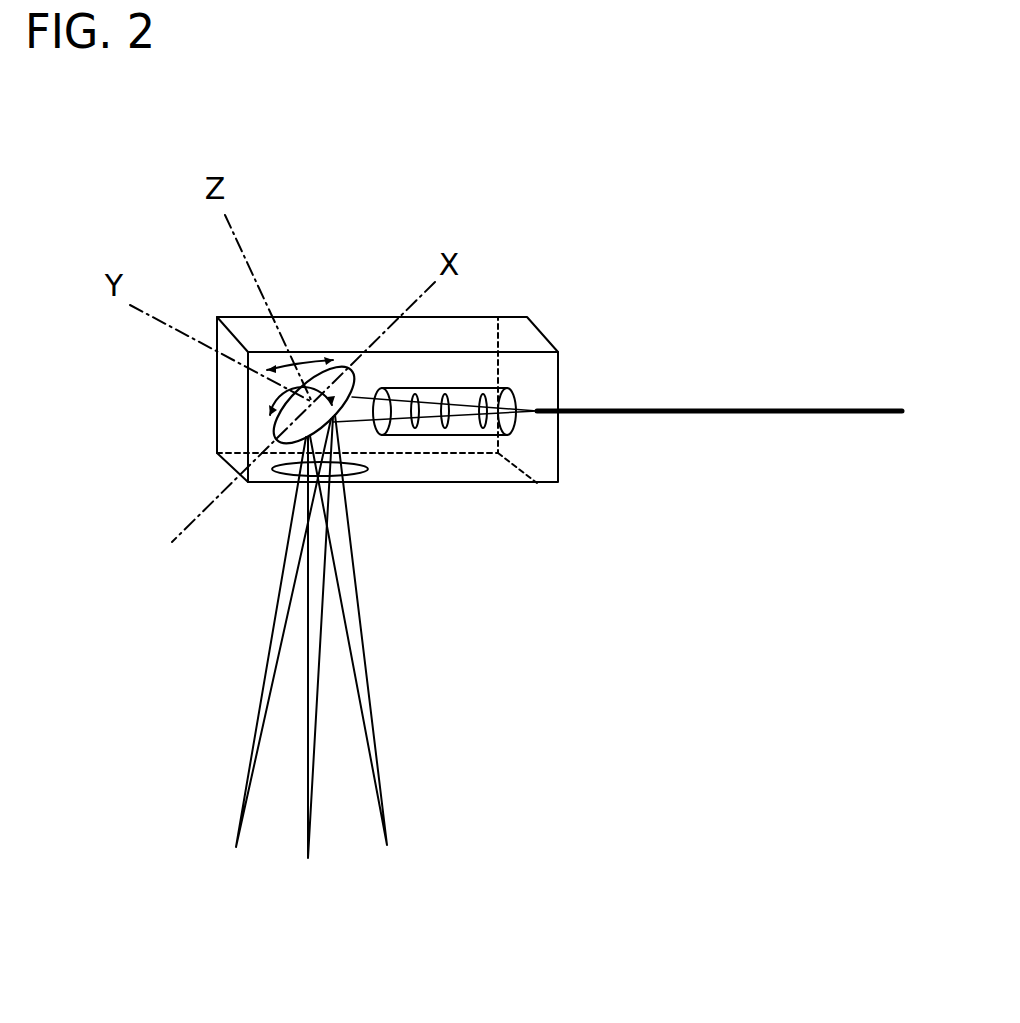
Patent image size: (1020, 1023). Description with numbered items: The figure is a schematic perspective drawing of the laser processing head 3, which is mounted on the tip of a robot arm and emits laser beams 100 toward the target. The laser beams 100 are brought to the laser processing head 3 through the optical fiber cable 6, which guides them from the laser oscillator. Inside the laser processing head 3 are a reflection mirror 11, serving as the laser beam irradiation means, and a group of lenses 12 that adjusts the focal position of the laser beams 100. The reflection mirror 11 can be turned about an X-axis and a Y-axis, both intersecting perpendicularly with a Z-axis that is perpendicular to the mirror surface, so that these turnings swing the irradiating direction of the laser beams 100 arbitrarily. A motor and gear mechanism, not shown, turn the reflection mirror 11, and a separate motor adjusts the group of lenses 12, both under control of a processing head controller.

The laser processing head 3 is at (340, 263).
The optical fiber cable 6 is at (732, 410).
The reflection mirror 11 is at (277, 423).
The group of lenses 12 is at (480, 388).
The laser beams 100 is at (363, 642).